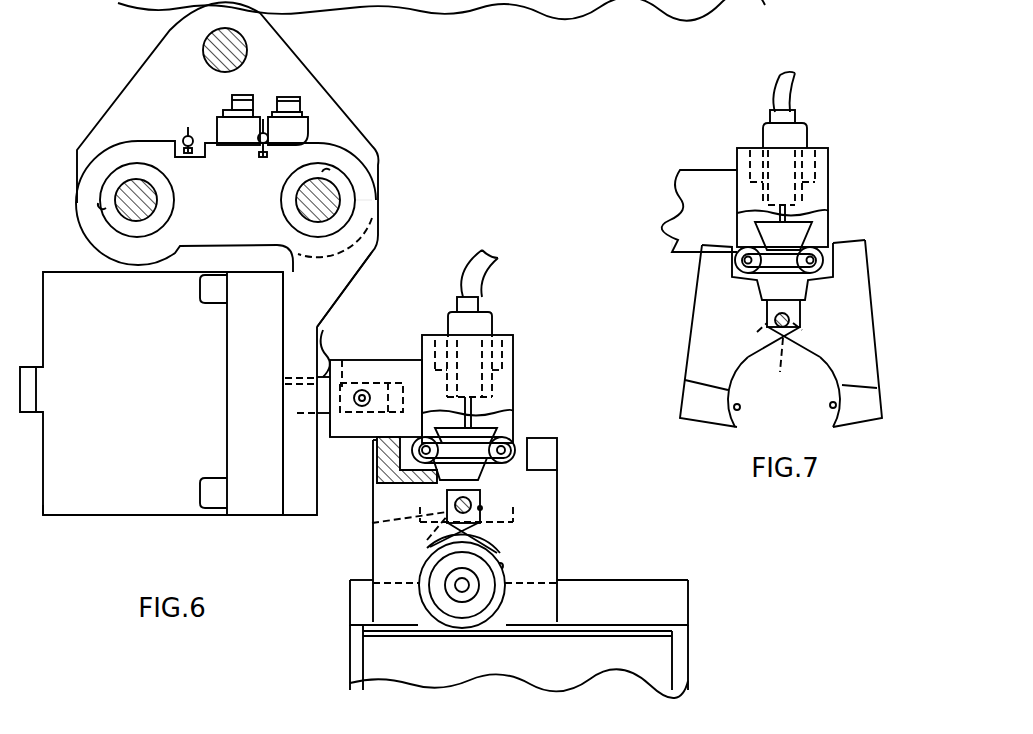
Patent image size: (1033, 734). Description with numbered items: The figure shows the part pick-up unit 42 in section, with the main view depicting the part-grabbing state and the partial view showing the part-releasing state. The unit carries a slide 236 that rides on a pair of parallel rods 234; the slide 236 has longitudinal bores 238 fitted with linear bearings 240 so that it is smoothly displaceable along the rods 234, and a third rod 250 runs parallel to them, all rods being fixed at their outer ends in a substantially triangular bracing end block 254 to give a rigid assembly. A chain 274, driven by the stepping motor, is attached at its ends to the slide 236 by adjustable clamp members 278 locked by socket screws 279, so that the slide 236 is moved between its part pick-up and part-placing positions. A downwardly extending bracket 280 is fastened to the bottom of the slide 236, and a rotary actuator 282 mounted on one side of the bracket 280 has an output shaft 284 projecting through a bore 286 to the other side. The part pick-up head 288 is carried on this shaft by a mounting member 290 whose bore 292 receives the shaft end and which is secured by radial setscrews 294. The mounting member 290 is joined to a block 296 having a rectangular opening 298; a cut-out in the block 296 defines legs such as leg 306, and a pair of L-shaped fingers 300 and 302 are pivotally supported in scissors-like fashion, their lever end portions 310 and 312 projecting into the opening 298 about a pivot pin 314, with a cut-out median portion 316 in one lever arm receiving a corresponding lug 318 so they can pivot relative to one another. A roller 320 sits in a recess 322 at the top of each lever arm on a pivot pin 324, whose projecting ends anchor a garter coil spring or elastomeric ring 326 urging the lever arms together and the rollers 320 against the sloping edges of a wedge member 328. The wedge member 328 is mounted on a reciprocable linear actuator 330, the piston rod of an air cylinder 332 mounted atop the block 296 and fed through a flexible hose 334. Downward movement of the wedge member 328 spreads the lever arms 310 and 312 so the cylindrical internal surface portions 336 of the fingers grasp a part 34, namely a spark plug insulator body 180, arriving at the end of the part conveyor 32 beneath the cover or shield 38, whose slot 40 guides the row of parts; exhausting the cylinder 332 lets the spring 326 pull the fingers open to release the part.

In FIG. 6, the part conveyor 32 is at (650, 630).
In FIG. 6, the part 34 is at (490, 632).
In FIG. 6, the cover or shield 38 is at (640, 590).
In FIG. 6, the slot 40 is at (427, 637).
In FIG. 6, the pick-up unit 42 is at (230, 540).
In FIG. 6, the spark plug insulator body 180 is at (450, 632).
In FIG. 6, the rods 234 is at (118, 190).
In FIG. 6, the slide 236 is at (372, 200).
In FIG. 6, the longitudinal bores 238 is at (100, 205).
In FIG. 6, the linear bearings 240 is at (108, 213).
In FIG. 6, the third rod 250 is at (240, 47).
In FIG. 6, the bracing end block 254 is at (157, 60).
In FIG. 6, the chain 274 is at (189, 128).
In FIG. 6, the clamp member 278 is at (242, 128).
In FIG. 6, the socket screws 279 is at (245, 95).
In FIG. 6, the bracket 280 is at (305, 505).
In FIG. 6, the rotary actuator 282 is at (88, 518).
In FIG. 6, the output shaft 284 is at (339, 344).
In FIG. 6, the bore 286 is at (285, 412).
In FIG. 6, the part pick-up head 288 is at (372, 360).
In FIG. 7, the part pick-up head 288 is at (705, 170).
In FIG. 6, the mounting member 290 is at (340, 422).
In FIG. 7, the mounting member 290 is at (670, 242).
In FIG. 6, the bore 292 is at (342, 380).
In FIG. 6, the setscrews 294 is at (367, 395).
In FIG. 6, the block 296 is at (514, 346).
In FIG. 7, the block 296 is at (830, 180).
In FIG. 6, the opening 298 is at (514, 418).
In FIG. 7, the opening 298 is at (820, 227).
In FIG. 6, the finger 300 is at (387, 605).
In FIG. 7, the finger 300 is at (728, 430).
In FIG. 6, the finger 302 is at (543, 601).
In FIG. 7, the finger 302 is at (880, 405).
In FIG. 6, the leg 306 is at (387, 524).
In FIG. 6, the lever end portion 310 is at (378, 565).
In FIG. 7, the lever end portion 310 is at (690, 372).
In FIG. 6, the lever end portion 312 is at (548, 483).
In FIG. 7, the lever end portion 312 is at (870, 335).
In FIG. 6, the pivot pin 314 is at (470, 504).
In FIG. 7, the pivot pin 314 is at (790, 320).
In FIG. 6, the cut-out median portion 316 is at (483, 517).
In FIG. 7, the cut-out median portion 316 is at (795, 364).
In FIG. 6, the lug 318 is at (428, 540).
In FIG. 7, the lug 318 is at (757, 333).
In FIG. 6, the roller 320 is at (512, 438).
In FIG. 7, the roller 320 is at (835, 256).
In FIG. 6, the recess 322 is at (537, 445).
In FIG. 7, the recess 322 is at (868, 272).
In FIG. 6, the pivot pin 324 is at (385, 452).
In FIG. 7, the pivot pin 324 is at (757, 285).
In FIG. 6, the garter coil spring or elastomeric ring 326 is at (440, 478).
In FIG. 7, the garter coil spring or elastomeric ring 326 is at (768, 305).
In FIG. 6, the wedge member 328 is at (440, 430).
In FIG. 7, the wedge member 328 is at (757, 228).
In FIG. 6, the linear actuator 330 is at (488, 398).
In FIG. 7, the linear actuator 330 is at (800, 214).
In FIG. 6, the air cylinder 332 is at (493, 318).
In FIG. 7, the air cylinder 332 is at (808, 136).
In FIG. 6, the flexible hose 334 is at (490, 256).
In FIG. 7, the flexible hose 334 is at (800, 88).
In FIG. 6, the cylindrical internal surface portion 336 is at (503, 566).
In FIG. 7, the cylindrical internal surface portion 336 is at (741, 407).